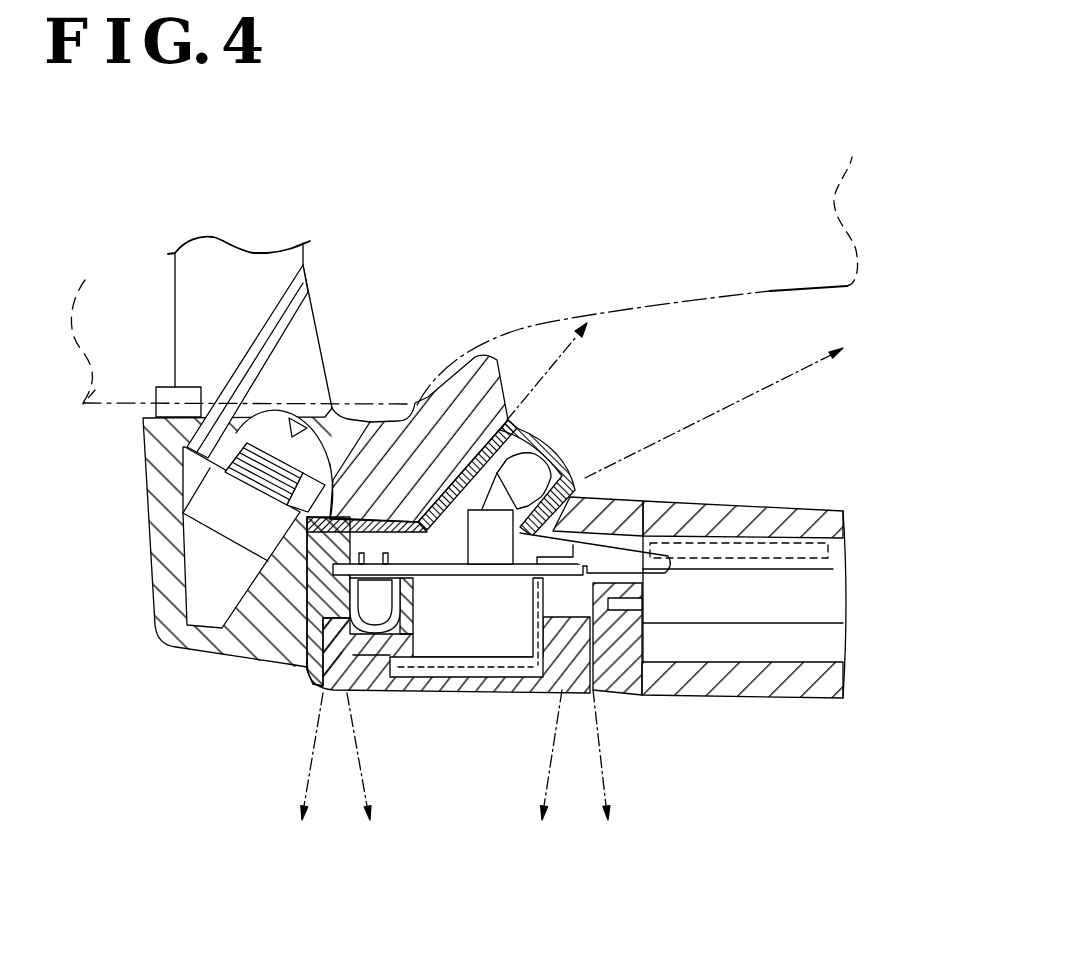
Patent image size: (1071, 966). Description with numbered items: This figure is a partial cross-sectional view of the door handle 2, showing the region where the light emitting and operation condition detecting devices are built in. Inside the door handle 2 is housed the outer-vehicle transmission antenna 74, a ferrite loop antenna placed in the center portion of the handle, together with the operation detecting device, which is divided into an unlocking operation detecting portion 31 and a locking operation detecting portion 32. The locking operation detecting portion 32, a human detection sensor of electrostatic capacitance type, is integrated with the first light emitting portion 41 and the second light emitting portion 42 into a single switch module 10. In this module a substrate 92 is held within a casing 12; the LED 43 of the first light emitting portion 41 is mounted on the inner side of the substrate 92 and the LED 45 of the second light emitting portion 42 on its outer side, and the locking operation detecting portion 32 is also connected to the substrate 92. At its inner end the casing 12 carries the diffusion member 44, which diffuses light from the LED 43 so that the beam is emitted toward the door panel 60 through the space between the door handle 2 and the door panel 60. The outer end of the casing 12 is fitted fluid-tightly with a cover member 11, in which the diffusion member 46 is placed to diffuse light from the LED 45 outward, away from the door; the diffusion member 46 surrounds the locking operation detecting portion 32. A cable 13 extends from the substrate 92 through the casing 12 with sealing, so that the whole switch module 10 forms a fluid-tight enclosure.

The door handle 2 is at (804, 713).
The switch module 10 is at (609, 696).
The cover member 11 is at (503, 692).
The casing 12 is at (455, 474).
The cable 13 is at (668, 570).
The unlocking operation detecting portion 31 is at (786, 538).
The locking operation detecting portion 32 is at (458, 688).
The first light emitting portion 41 is at (707, 390).
The second light emitting portion 42 is at (222, 681).
The LED 43 is at (548, 450).
The diffusion member 44 is at (582, 490).
The LED 45 is at (360, 597).
The diffusion member 46 is at (338, 690).
The door panel 60 is at (238, 452).
The outer-vehicle transmission antenna 74 is at (813, 610).
The substrate 92 is at (437, 577).